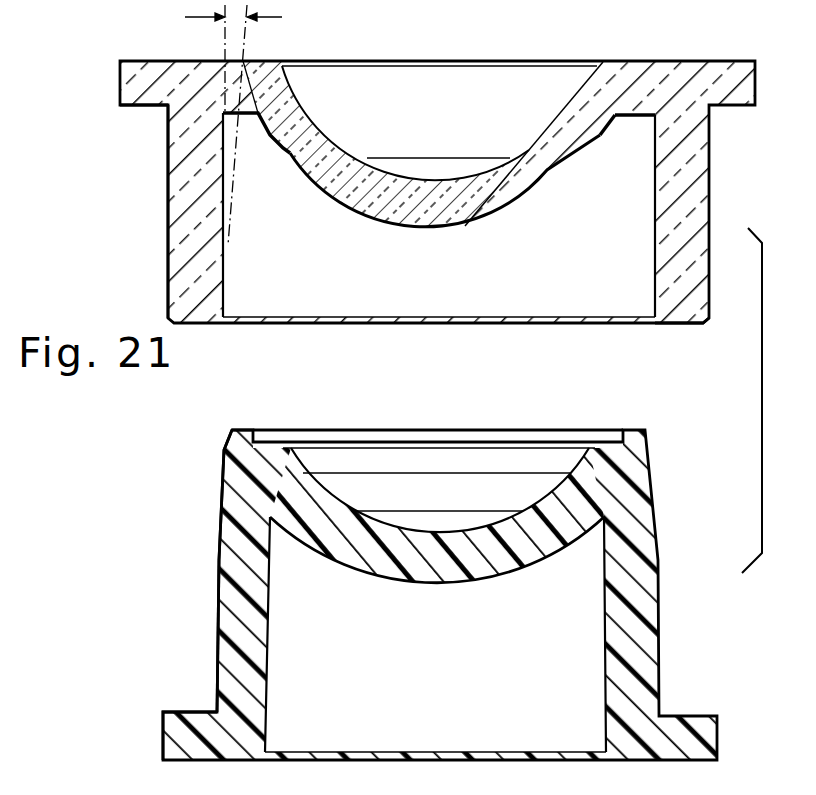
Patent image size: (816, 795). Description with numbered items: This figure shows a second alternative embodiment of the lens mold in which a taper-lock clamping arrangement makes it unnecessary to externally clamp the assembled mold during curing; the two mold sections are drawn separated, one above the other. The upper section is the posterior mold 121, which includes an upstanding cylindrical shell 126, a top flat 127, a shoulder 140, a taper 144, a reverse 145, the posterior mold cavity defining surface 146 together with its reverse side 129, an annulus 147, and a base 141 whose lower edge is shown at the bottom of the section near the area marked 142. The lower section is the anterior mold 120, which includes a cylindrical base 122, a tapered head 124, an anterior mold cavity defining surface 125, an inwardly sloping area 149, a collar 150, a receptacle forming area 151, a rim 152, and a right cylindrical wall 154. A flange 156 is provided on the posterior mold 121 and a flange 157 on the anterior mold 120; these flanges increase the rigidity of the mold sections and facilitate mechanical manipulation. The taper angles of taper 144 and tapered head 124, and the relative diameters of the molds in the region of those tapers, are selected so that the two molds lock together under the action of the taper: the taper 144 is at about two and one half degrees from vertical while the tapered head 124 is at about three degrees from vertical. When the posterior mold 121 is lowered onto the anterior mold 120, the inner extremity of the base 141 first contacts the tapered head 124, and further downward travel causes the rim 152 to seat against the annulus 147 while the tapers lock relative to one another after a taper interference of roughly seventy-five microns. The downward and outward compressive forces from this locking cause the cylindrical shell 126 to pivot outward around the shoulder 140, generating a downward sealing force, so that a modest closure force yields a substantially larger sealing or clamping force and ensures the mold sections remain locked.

The anterior mold 120 is at (411, 562).
The posterior mold 121 is at (413, 198).
The cylindrical base 122 is at (215, 688).
The tapered head 124 is at (240, 562).
The anterior mold cavity defining surface 125 is at (553, 493).
The upstanding cylindrical shell 126 is at (173, 258).
The top flat 127 is at (258, 66).
The reverse side of posterior mold cavity defining surface 129 is at (318, 113).
The shoulder 140 is at (167, 112).
The base 141 is at (687, 325).
The bottom surface 142 is at (594, 325).
The taper 144 is at (226, 238).
The reverse 145 is at (632, 120).
The posterior mold cavity defining surface 146 is at (476, 229).
The annulus 147 is at (592, 146).
The inwardly sloping area 149 is at (233, 440).
The collar 150 is at (243, 430).
The receptacle forming area 151 is at (253, 440).
The rim 152 is at (287, 447).
The right cylindrical wall 154 is at (471, 446).
The flange 156 is at (120, 108).
The flange 157 is at (177, 735).